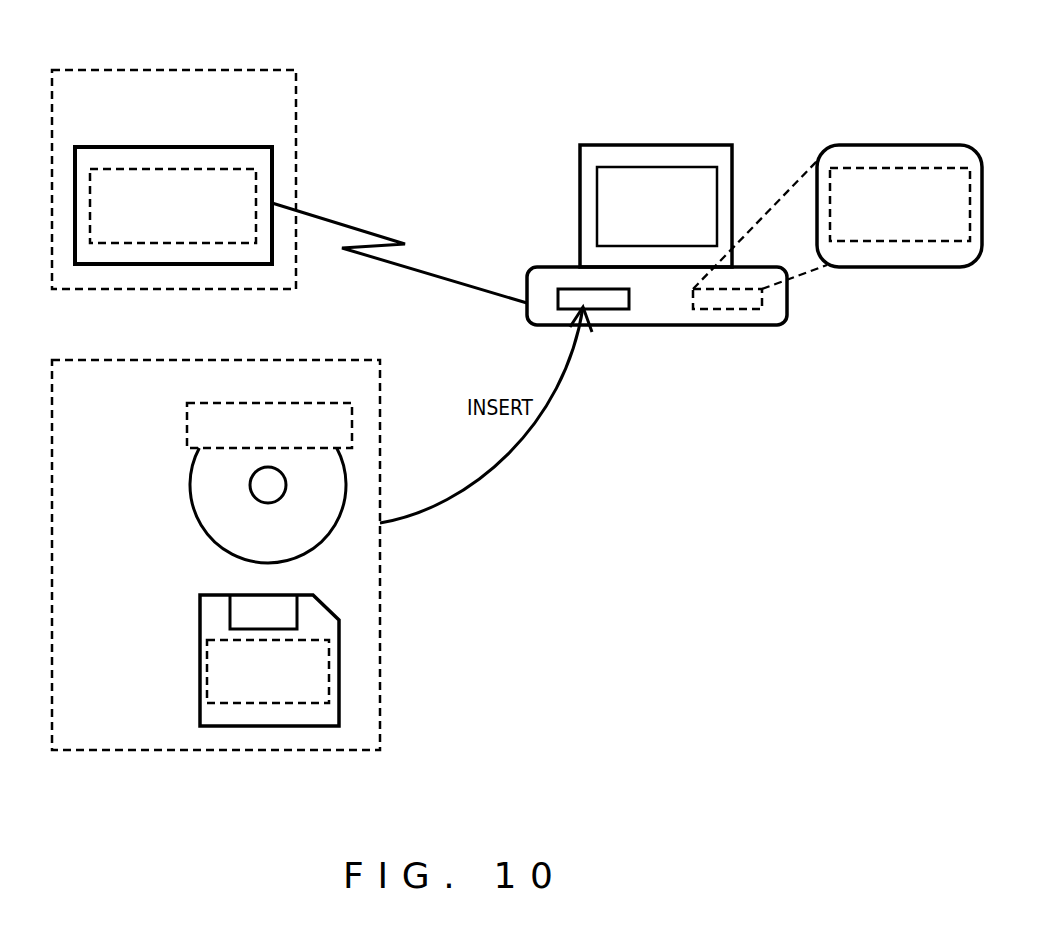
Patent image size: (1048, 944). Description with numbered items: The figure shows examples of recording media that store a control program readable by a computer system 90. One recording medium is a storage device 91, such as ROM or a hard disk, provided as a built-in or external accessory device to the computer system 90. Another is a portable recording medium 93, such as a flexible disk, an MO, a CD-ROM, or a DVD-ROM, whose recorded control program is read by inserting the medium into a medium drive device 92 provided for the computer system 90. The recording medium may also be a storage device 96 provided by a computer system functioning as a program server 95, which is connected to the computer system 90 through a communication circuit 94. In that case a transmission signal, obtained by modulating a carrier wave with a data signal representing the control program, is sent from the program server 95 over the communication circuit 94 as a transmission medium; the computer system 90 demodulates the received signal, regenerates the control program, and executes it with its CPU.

The computer system 90 is at (608, 145).
The storage device 91 is at (880, 145).
The medium drive device 92 is at (643, 325).
The portable recording medium 93 is at (380, 362).
The communication circuit 94 is at (399, 253).
The program server 95 is at (296, 85).
The storage device 96 is at (250, 147).